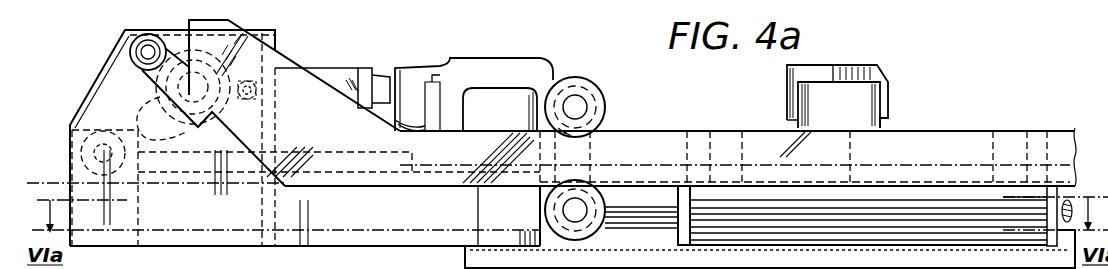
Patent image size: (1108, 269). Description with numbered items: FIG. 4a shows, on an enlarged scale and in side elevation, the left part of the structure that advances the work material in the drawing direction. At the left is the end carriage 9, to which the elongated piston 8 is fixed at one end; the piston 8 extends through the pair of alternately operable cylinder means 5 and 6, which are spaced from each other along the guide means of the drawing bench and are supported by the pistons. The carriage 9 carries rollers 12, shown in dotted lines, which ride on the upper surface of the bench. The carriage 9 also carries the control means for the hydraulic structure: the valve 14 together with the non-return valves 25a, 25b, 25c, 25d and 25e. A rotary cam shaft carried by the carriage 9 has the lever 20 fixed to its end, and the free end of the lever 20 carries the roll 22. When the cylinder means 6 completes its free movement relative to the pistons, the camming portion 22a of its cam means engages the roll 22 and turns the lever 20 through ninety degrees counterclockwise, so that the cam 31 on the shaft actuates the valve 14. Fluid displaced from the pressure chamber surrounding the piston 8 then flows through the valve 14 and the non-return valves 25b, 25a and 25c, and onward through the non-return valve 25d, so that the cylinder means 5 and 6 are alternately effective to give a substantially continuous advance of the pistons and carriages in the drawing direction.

The cylinder means 5 is at (793, 181).
The cylinder means 6 is at (1072, 196).
The piston 8 is at (646, 213).
The end carriage 9 is at (70, 118).
The rollers 12 is at (73, 165).
The valve 14 is at (355, 69).
The lever 20 is at (160, 80).
The roll 22 is at (131, 43).
The camming portion 22a is at (280, 60).
The non-return valve 25a is at (420, 55).
The non-return valve 25b is at (428, 133).
The non-return valve 25c is at (573, 75).
The non-return valve 25d is at (787, 100).
The non-return valve 25e is at (889, 100).
The cam 31 is at (176, 140).